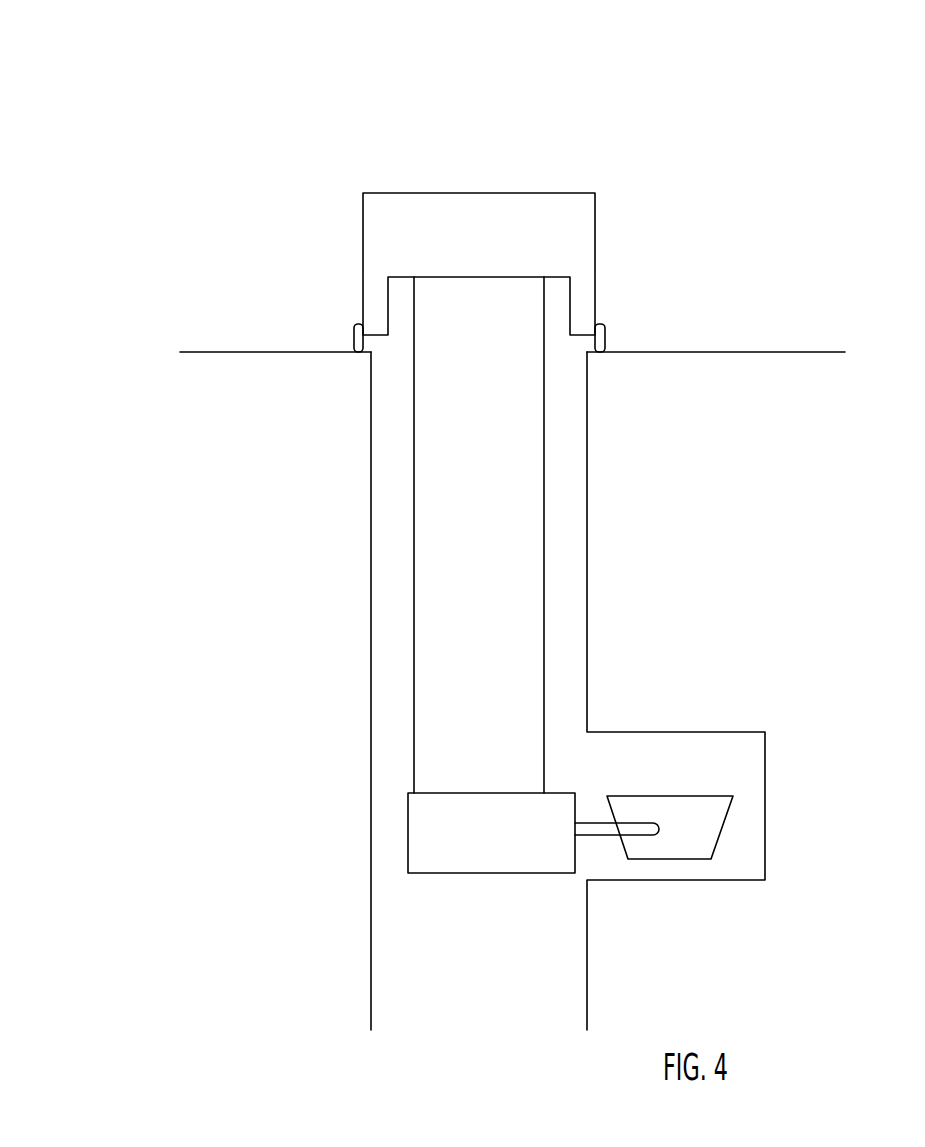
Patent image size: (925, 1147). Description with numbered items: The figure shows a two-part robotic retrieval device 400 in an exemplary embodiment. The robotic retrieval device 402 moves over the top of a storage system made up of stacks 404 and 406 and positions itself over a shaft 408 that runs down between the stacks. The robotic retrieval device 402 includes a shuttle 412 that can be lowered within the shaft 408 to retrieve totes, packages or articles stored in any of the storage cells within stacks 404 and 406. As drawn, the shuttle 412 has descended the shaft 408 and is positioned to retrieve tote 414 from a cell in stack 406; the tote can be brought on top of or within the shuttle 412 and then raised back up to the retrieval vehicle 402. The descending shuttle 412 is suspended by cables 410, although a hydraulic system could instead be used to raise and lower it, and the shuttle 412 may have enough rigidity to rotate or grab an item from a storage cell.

The downhole tool system 400 is at (108, 108).
The robotic retrieval device 402 is at (446, 191).
The stack 404 is at (230, 350).
The stack 406 is at (690, 350).
The shaft 408 is at (440, 1003).
The cables 410 is at (544, 432).
The shuttle 412 is at (473, 792).
The tote 414 is at (696, 795).